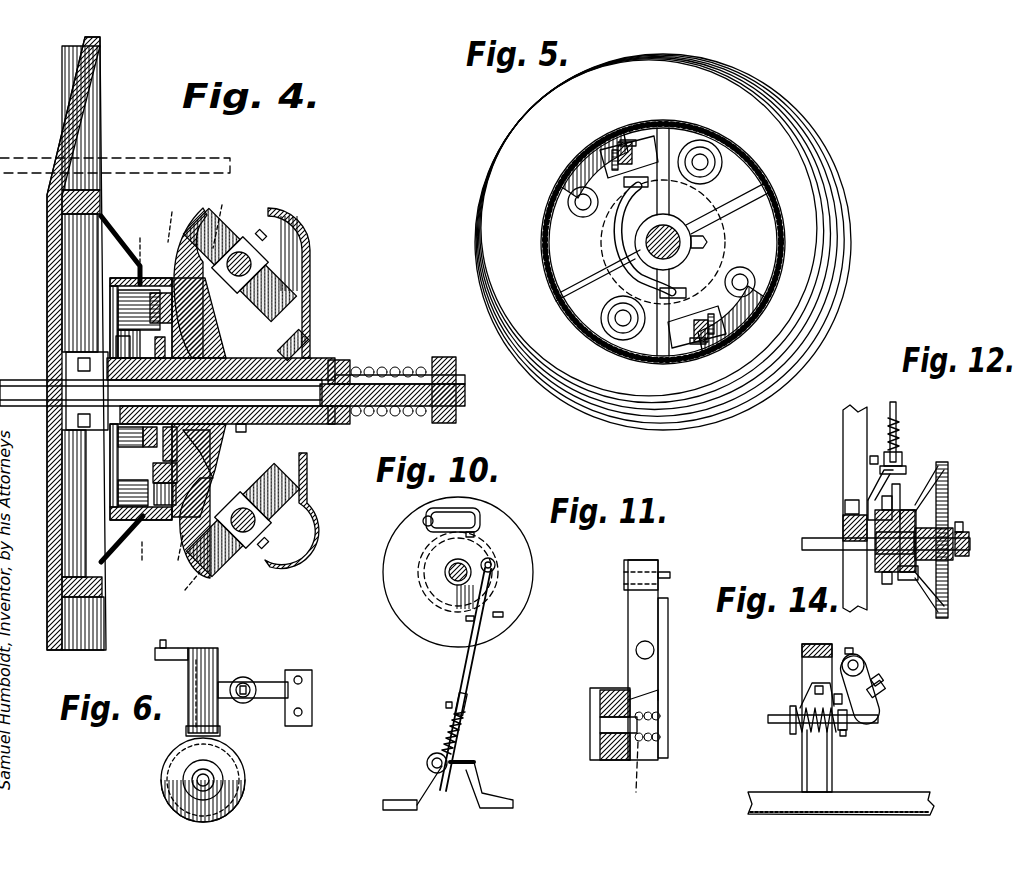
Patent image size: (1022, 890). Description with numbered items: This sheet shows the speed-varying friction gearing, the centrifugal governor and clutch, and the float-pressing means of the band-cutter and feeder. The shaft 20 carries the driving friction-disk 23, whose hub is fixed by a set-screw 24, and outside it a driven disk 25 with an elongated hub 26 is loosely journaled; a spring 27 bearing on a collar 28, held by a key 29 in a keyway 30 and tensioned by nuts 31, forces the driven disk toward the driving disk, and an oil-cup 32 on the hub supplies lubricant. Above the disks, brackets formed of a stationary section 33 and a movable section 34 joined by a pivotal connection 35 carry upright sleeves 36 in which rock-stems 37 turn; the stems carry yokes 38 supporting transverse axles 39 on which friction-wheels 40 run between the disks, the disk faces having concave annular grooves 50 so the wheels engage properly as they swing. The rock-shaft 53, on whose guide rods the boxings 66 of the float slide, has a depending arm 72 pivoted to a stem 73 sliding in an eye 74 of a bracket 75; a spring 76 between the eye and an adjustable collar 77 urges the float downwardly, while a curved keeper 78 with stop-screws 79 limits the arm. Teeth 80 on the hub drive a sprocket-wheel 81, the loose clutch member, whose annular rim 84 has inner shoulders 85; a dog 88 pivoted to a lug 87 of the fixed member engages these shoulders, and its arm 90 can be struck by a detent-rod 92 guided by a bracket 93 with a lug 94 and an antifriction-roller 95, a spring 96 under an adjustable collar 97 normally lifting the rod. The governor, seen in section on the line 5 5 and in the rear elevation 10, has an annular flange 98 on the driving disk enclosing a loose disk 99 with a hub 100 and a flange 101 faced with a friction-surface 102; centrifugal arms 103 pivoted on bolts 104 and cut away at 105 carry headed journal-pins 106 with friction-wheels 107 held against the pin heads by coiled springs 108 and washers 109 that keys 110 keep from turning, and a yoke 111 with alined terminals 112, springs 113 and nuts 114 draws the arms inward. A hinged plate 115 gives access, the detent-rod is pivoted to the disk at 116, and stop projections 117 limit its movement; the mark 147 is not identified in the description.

In FIG. 4, the section line 5 is at (143, 400).
In FIG. 4, the frame post 10 is at (58, 343).
In FIG. 12, the frame post 10 is at (845, 426).
In FIG. 14, the frame post 10 is at (913, 795).
In FIG. 4, the shaft 20 is at (25, 382).
In FIG. 5, the shaft 20 is at (670, 230).
In FIG. 10, the shaft 20 is at (448, 582).
In FIG. 4, the friction-disk 23 is at (205, 332).
In FIG. 5, the friction-disk 23 is at (476, 230).
In FIG. 4, the set-screw 24 is at (205, 348).
In FIG. 5, the set-screw 24 is at (708, 242).
In FIG. 4, the driven disk 25 is at (300, 226).
In FIG. 4, the elongated hub 26 is at (338, 360).
In FIG. 4, the spring 27 is at (392, 368).
In FIG. 4, the collar 28 is at (340, 424).
In FIG. 4, the key 29 is at (356, 362).
In FIG. 4, the keyway 30 is at (368, 383).
In FIG. 4, the nuts 31 is at (446, 357).
In FIG. 4, the oil-cup 32 is at (305, 345).
In FIG. 4, the stationary section 33 is at (118, 230).
In FIG. 6, the stationary section 33 is at (270, 680).
In FIG. 4, the movable section 34 is at (201, 388).
In FIG. 6, the movable section 34 is at (236, 680).
In FIG. 4, the pivotal connection 35 is at (173, 377).
In FIG. 6, the pivotal connection 35 is at (248, 700).
In FIG. 6, the upright sleeves 36 is at (192, 712).
In FIG. 4, the rock-stems 37 is at (254, 264).
In FIG. 6, the rock-stems 37 is at (190, 684).
In FIG. 4, the yokes 38 is at (245, 240).
In FIG. 6, the yokes 38 is at (203, 744).
In FIG. 4, the transverse axles 39 is at (270, 232).
In FIG. 6, the transverse axles 39 is at (210, 782).
In FIG. 4, the friction-wheels 40 is at (312, 292).
In FIG. 6, the friction-wheels 40 is at (164, 788).
In FIG. 4, the annular grooves 50 is at (207, 220).
In FIG. 4, the actuating rock-shaft 53 is at (143, 158).
In FIG. 14, the actuating rock-shaft 53 is at (862, 662).
In FIG. 12, the boxings 66 is at (895, 578).
In FIG. 14, the depending arm 72 is at (872, 716).
In FIG. 14, the stem 73 is at (774, 724).
In FIG. 14, the eye 74 is at (793, 735).
In FIG. 14, the bracket 75 is at (804, 700).
In FIG. 14, the spring 76 is at (820, 736).
In FIG. 14, the adjustable collar 77 is at (848, 728).
In FIG. 14, the curved keeper 78 is at (884, 696).
In FIG. 12, the stop-screws 79 is at (812, 540).
In FIG. 14, the stop-screws 79 is at (835, 700).
In FIG. 4, the teeth 80 is at (246, 428).
In FIG. 12, the sprocket-wheel 81 is at (950, 602).
In FIG. 12, the annular rim 84 is at (934, 604).
In FIG. 12, the shoulders 85 is at (925, 580).
In FIG. 12, the outstanding lug 87 is at (862, 550).
In FIG. 12, the dog 88 is at (905, 510).
In FIG. 12, the arm 90 is at (888, 498).
In FIG. 4, the detent-rod 92 is at (118, 340).
In FIG. 10, the detent-rod 92 is at (470, 672).
In FIG. 12, the detent-rod 92 is at (897, 408).
In FIG. 10, the guide-bracket 93 is at (490, 792).
In FIG. 12, the guide-bracket 93 is at (880, 486).
In FIG. 10, the lug 94 is at (466, 760).
In FIG. 10, the antifriction-roller 95 is at (430, 756).
In FIG. 12, the antifriction-roller 95 is at (904, 462).
In FIG. 10, the spring 96 is at (462, 722).
In FIG. 12, the spring 96 is at (900, 430).
In FIG. 10, the adjustable collar 97 is at (470, 702).
In FIG. 4, the annular flange 98 is at (110, 282).
In FIG. 5, the annular flange 98 is at (560, 260).
In FIG. 4, the disk 99 is at (115, 305).
In FIG. 10, the disk 99 is at (533, 574).
In FIG. 4, the hub 100 is at (150, 372).
In FIG. 4, the annular rib 101 is at (118, 462).
In FIG. 10, the annular rib 101 is at (418, 578).
In FIG. 4, the friction-surface 102 is at (126, 476).
In FIG. 4, the centrifugal arms 103 is at (160, 292).
In FIG. 5, the centrifugal arms 103 is at (590, 178).
In FIG. 11, the centrifugal arms 103 is at (660, 650).
In FIG. 4, the bolt 104 is at (125, 300).
In FIG. 5, the bolt 104 is at (568, 204).
In FIG. 11, the bolt 104 is at (668, 574).
In FIG. 5, the cut-away portion 105 is at (670, 150).
In FIG. 11, the cut-away portion 105 is at (668, 706).
In FIG. 5, the headed journal-pins 106 is at (712, 148).
In FIG. 11, the headed journal-pins 106 is at (600, 722).
In FIG. 5, the friction-wheels 107 is at (716, 164).
In FIG. 11, the friction-wheels 107 is at (616, 760).
In FIG. 4, the coiled springs 108 is at (133, 437).
In FIG. 11, the coiled springs 108 is at (650, 745).
In FIG. 11, the washers 109 is at (656, 700).
In FIG. 11, the keys 110 is at (643, 777).
In FIG. 4, the yoke 111 is at (154, 477).
In FIG. 5, the yoke 111 is at (625, 250).
In FIG. 5, the alined terminals 112 is at (642, 140).
In FIG. 5, the springs 113 is at (622, 142).
In FIG. 5, the nuts 114 is at (620, 150).
In FIG. 10, the hinged plate 115 is at (462, 518).
In FIG. 10, the pivot 116 is at (492, 560).
In FIG. 10, the stop projections 117 is at (500, 620).
In FIG. 6, the roller rim 147 is at (183, 778).